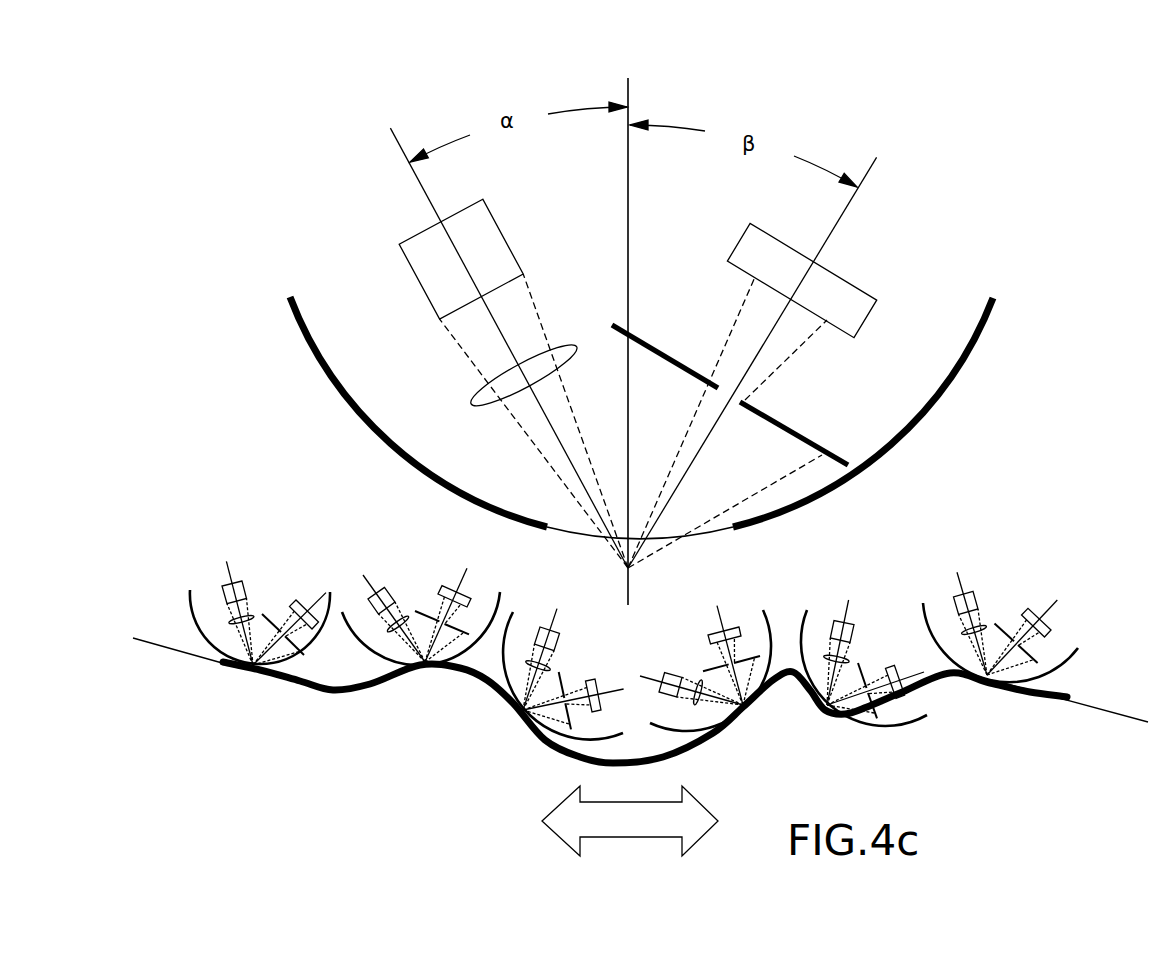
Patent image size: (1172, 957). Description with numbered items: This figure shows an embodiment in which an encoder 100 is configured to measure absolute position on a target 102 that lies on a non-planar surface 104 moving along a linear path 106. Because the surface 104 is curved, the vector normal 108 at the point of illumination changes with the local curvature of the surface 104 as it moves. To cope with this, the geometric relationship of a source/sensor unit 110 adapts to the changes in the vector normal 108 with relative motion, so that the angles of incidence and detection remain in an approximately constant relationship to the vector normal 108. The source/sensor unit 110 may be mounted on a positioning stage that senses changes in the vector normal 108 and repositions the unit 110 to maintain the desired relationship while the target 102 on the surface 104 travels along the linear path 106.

The encoder 100 is at (254, 129).
The target 102 is at (494, 736).
The non-planar surface 104 is at (1109, 721).
The linear path 106 is at (546, 839).
The vector normal 108 is at (656, 91).
The source/sensor unit 110 is at (943, 204).